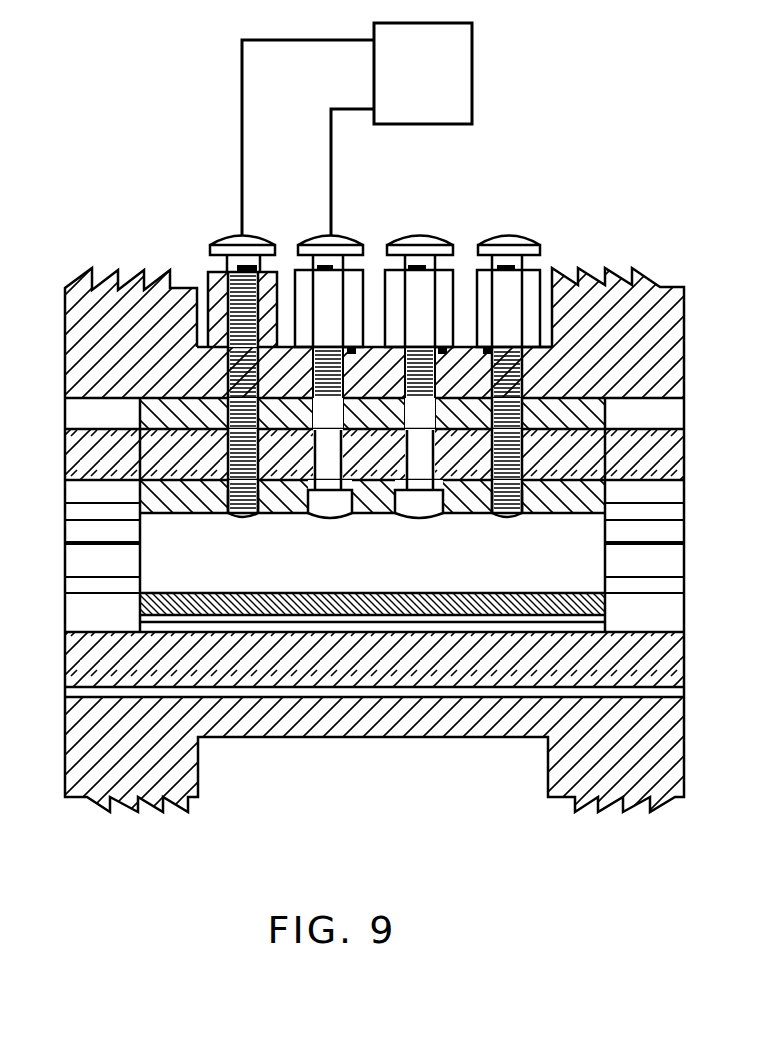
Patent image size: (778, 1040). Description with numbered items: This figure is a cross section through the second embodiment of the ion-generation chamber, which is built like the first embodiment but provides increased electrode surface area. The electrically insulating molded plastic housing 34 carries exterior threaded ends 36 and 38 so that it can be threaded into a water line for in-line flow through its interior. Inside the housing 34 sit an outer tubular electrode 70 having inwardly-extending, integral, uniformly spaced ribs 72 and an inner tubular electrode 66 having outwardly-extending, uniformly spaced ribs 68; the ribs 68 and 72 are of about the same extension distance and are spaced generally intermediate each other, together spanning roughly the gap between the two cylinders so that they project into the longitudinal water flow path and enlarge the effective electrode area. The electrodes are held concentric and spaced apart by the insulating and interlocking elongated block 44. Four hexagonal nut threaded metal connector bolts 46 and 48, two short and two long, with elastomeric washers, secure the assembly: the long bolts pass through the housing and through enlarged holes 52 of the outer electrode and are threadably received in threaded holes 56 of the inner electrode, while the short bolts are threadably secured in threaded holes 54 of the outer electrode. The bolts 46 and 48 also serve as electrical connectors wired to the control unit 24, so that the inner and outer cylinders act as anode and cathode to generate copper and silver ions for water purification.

The electronic control unit 24 is at (404, 98).
The housing 34 is at (668, 751).
The exterior threaded end 36 is at (136, 282).
The exterior threaded end 38 is at (588, 274).
The insulating and interlocking elongated block 44 is at (665, 449).
The connector bolt 46 is at (218, 237).
The connector bolt 48 is at (443, 233).
The enlarged hole 52 is at (214, 513).
The threaded hole 54 is at (404, 380).
The threaded hole 56 is at (277, 514).
The inner tubular electrode 66 is at (607, 596).
The outwardly-extending ribs 68 is at (668, 527).
The outer tubular electrode 70 is at (605, 394).
The inwardly-extending ribs 72 is at (605, 412).